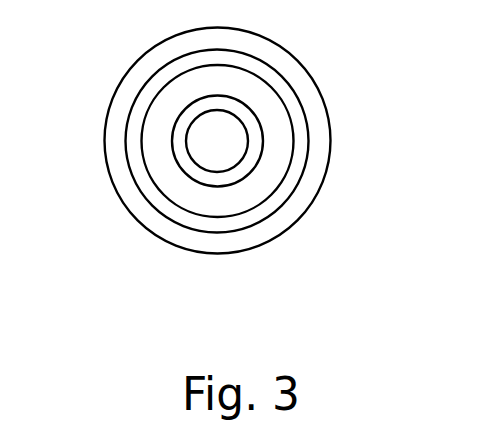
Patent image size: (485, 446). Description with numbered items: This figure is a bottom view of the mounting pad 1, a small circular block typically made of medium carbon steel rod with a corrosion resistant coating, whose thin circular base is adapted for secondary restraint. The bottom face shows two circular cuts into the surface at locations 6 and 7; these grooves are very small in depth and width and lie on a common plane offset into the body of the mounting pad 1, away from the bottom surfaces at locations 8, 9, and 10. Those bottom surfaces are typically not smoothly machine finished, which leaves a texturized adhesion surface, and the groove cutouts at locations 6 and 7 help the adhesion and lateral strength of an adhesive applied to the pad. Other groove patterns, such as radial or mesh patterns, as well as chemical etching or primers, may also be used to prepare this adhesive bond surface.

The mounting pad 1 is at (277, 242).
The circular cut location 6 is at (300, 157).
The circular cut location 7 is at (235, 108).
The bottom surface location 8 is at (118, 120).
The bottom surface location 9 is at (177, 185).
The bottom surface location 10 is at (217, 152).